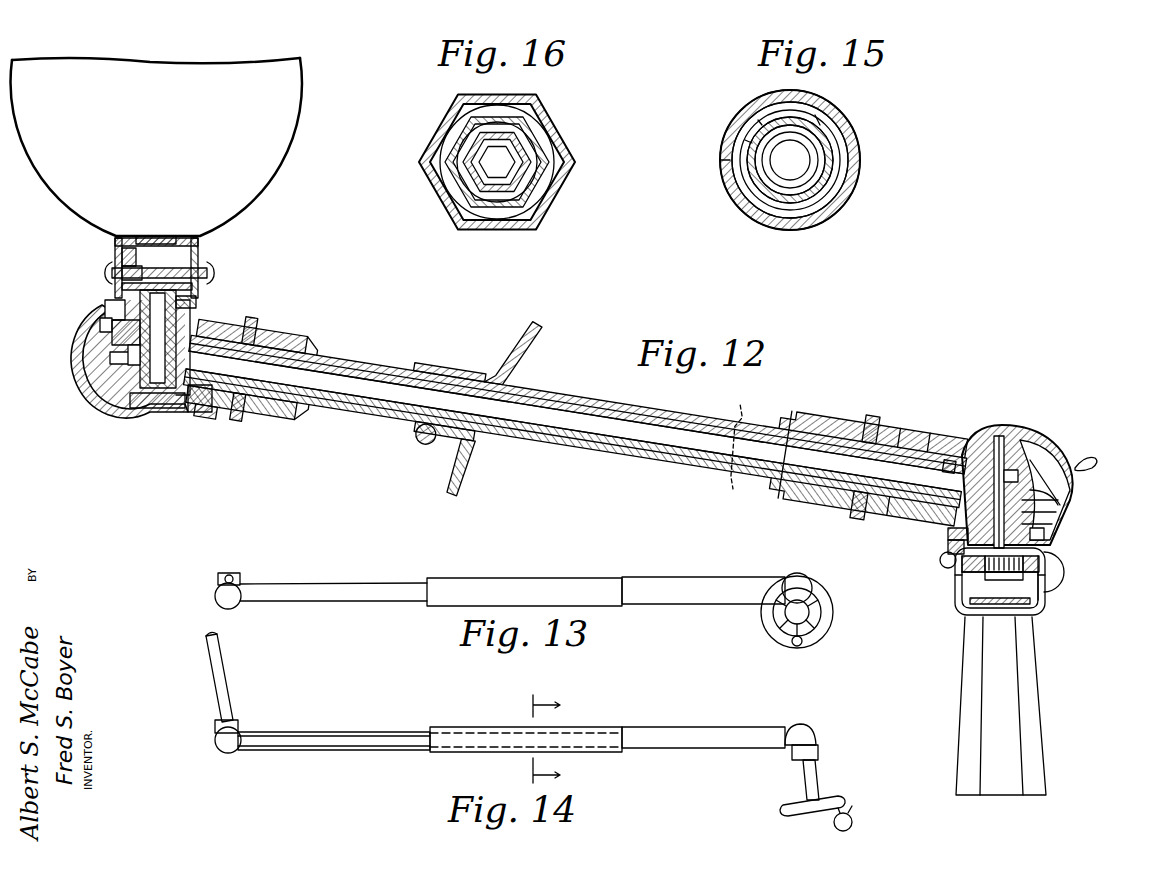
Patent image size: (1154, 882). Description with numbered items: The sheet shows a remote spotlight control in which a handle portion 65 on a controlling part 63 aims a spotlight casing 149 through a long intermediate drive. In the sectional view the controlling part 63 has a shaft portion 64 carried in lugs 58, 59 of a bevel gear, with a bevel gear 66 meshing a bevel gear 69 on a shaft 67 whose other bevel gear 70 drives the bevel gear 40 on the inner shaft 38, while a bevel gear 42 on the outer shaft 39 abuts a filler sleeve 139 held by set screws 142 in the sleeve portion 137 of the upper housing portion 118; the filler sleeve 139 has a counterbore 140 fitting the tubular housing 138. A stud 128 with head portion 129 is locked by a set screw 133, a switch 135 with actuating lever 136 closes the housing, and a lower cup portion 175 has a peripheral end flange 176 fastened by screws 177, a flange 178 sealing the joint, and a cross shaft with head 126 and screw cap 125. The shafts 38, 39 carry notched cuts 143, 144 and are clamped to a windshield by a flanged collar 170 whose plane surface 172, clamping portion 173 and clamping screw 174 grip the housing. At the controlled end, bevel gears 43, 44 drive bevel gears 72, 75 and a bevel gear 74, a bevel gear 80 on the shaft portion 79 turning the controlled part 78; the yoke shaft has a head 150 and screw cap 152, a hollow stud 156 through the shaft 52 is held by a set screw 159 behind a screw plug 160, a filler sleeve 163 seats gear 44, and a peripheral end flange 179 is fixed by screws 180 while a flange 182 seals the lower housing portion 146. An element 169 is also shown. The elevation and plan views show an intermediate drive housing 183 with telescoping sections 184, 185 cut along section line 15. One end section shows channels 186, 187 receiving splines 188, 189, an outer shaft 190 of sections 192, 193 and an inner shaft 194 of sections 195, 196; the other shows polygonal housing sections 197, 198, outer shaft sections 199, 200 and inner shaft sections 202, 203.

In FIG. 14, the section line 15 is at (529, 735).
In FIG. 12, the inner shaft 38 is at (642, 410).
In FIG. 12, the outer shaft 39 is at (648, 465).
In FIG. 12, the bevel gear 40 is at (997, 433).
In FIG. 12, the bevel gear 42 is at (960, 440).
In FIG. 12, the bevel gear 43 is at (183, 410).
In FIG. 12, the bevel gear 44 is at (202, 415).
In FIG. 12, the shaft 52 is at (1056, 512).
In FIG. 12, the projecting lug 58 is at (960, 590).
In FIG. 12, the projecting lug 59 is at (1046, 590).
In FIG. 12, the controlling part 63 is at (1040, 682).
In FIG. 13, the controlling part 63 is at (810, 612).
In FIG. 14, the controlling part 63 is at (820, 768).
In FIG. 12, the shaft portion 64 is at (972, 603).
In FIG. 12, the handle portion 65 is at (1028, 750).
In FIG. 13, the handle portion 65 is at (802, 644).
In FIG. 14, the handle portion 65 is at (852, 812).
In FIG. 12, the bevel gear 66 is at (1046, 556).
In FIG. 12, the shaft 67 is at (1052, 524).
In FIG. 12, the bevel gear 69 is at (942, 562).
In FIG. 12, the bevel gear 70 is at (1058, 500).
In FIG. 12, the bevel gear 72 is at (100, 352).
In FIG. 12, the bevel gear 74 is at (205, 292).
In FIG. 12, the bevel gear 75 is at (100, 336).
In FIG. 12, the controlled part 78 is at (200, 256).
In FIG. 13, the controlled part 78 is at (240, 580).
In FIG. 14, the controlled part 78 is at (225, 683).
In FIG. 12, the shaft portion 79 is at (163, 270).
In FIG. 12, the bevel gear 80 is at (118, 262).
In FIG. 12, the upper housing portion 118 is at (905, 430).
In FIG. 12, the screw cap 125 is at (960, 572).
In FIG. 12, the head 126 is at (1054, 575).
In FIG. 12, the stud 128 is at (1010, 445).
In FIG. 12, the head portion 129 is at (1046, 564).
In FIG. 12, the set screw 133 is at (1028, 435).
In FIG. 12, the switch 135 is at (1065, 480).
In FIG. 12, the actuating lever 136 is at (1084, 458).
In FIG. 12, the sleeve portion 137 is at (785, 500).
In FIG. 12, the tubular housing 138 is at (560, 392).
In FIG. 12, the filler sleeve 139 is at (802, 410).
In FIG. 12, the counterbore 140 is at (890, 430).
In FIG. 12, the set screws 142 is at (865, 420).
In FIG. 12, the notched cut 143 is at (765, 420).
In FIG. 12, the notched cut 144 is at (748, 402).
In FIG. 12, the lower housing portion 146 is at (265, 430).
In FIG. 12, the casing 149 is at (262, 178).
In FIG. 12, the head 150 is at (116, 272).
In FIG. 12, the screw cap 152 is at (207, 268).
In FIG. 12, the hollow stud 156 is at (140, 378).
In FIG. 12, the set screw 159 is at (130, 370).
In FIG. 12, the screw plug 160 is at (108, 362).
In FIG. 12, the filler sleeve 163 is at (300, 343).
In FIG. 12, the cap 169 is at (140, 410).
In FIG. 12, the flanged collar 170 is at (460, 372).
In FIG. 12, the plane surface 172 is at (542, 350).
In FIG. 12, the clamping portion 173 is at (452, 445).
In FIG. 12, the clamping screw 174 is at (410, 437).
In FIG. 12, the lower cup portion 175 is at (988, 600).
In FIG. 12, the peripheral end flange 176 is at (948, 534).
In FIG. 12, the screws 177 is at (1044, 544).
In FIG. 12, the flange / upper cup portion 178 is at (150, 238).
In FIG. 12, the peripheral end flange 179 is at (106, 306).
In FIG. 12, the screws 180 is at (112, 286).
In FIG. 12, the flange 182 is at (102, 322).
In FIG. 13, the intermediate drive housing 183 is at (645, 577).
In FIG. 14, the intermediate drive housing 183 is at (665, 727).
In FIG. 13, the housing section 184 is at (360, 582).
In FIG. 14, the housing section 184 is at (345, 730).
In FIG. 15, the housing section 184 is at (772, 226).
In FIG. 13, the housing section 185 is at (540, 578).
In FIG. 14, the housing section 185 is at (585, 727).
In FIG. 15, the housing section 185 is at (860, 165).
In FIG. 15, the longitudinal channel 186 is at (842, 140).
In FIG. 15, the longitudinal channel 187 is at (728, 180).
In FIG. 15, the exterior spline 188 is at (838, 152).
In FIG. 15, the exterior spline 189 is at (722, 167).
In FIG. 15, the outer shaft 190 is at (830, 205).
In FIG. 15, the outer shaft section 192 is at (800, 230).
In FIG. 15, the inner shaft section 193 is at (808, 130).
In FIG. 15, the inner shaft 194 is at (745, 200).
In FIG. 15, the shaft section 195 is at (745, 140).
In FIG. 15, the shaft section 196 is at (770, 112).
In FIG. 16, the housing section 197 is at (555, 145).
In FIG. 16, the housing section 198 is at (440, 185).
In FIG. 16, the shaft section 199 is at (545, 190).
In FIG. 16, the shaft section 200 is at (548, 110).
In FIG. 16, the shaft section 202 is at (500, 232).
In FIG. 16, the shaft section 203 is at (455, 215).